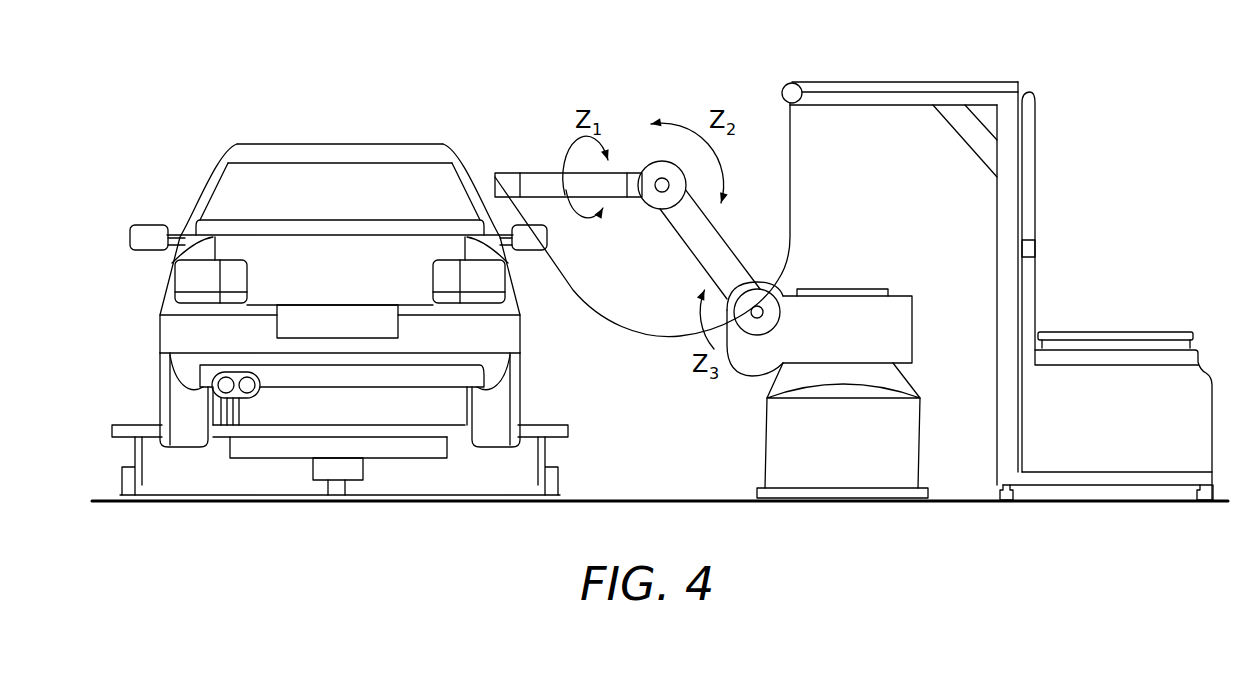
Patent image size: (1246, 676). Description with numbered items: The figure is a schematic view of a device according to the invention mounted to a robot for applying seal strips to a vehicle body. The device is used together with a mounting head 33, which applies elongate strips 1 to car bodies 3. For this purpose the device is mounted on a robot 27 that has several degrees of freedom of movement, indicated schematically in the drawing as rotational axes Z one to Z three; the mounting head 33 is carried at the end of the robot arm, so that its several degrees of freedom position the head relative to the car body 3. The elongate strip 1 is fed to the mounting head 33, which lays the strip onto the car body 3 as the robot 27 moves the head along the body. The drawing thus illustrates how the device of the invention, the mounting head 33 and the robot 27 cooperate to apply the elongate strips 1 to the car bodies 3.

The elongate strips 1 is at (618, 330).
The car bodies 3 is at (285, 143).
The robot 27 is at (847, 306).
The mounting head 33 is at (497, 173).